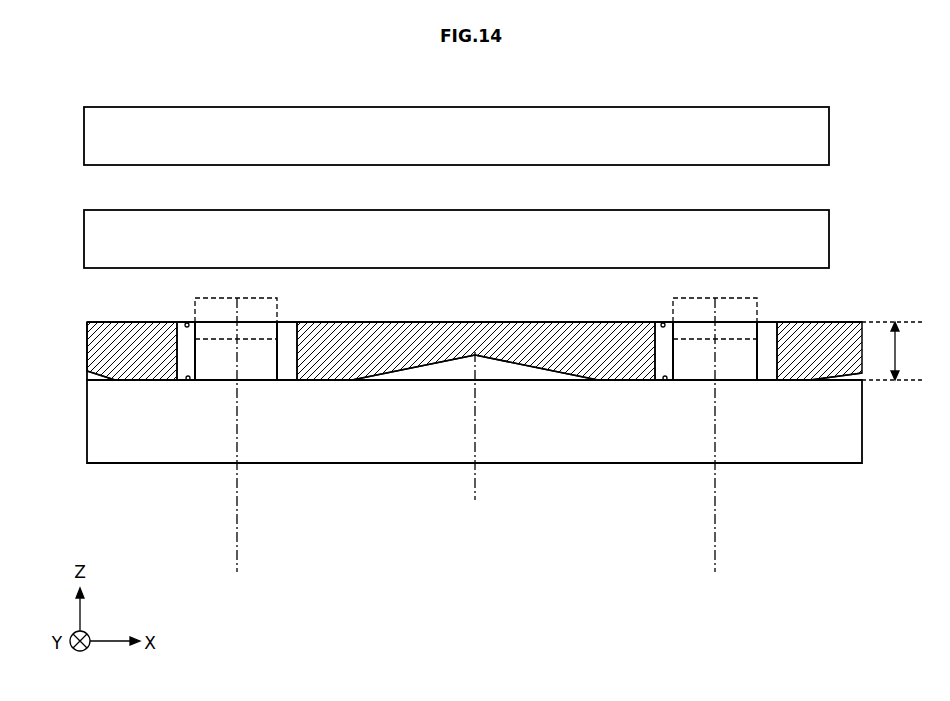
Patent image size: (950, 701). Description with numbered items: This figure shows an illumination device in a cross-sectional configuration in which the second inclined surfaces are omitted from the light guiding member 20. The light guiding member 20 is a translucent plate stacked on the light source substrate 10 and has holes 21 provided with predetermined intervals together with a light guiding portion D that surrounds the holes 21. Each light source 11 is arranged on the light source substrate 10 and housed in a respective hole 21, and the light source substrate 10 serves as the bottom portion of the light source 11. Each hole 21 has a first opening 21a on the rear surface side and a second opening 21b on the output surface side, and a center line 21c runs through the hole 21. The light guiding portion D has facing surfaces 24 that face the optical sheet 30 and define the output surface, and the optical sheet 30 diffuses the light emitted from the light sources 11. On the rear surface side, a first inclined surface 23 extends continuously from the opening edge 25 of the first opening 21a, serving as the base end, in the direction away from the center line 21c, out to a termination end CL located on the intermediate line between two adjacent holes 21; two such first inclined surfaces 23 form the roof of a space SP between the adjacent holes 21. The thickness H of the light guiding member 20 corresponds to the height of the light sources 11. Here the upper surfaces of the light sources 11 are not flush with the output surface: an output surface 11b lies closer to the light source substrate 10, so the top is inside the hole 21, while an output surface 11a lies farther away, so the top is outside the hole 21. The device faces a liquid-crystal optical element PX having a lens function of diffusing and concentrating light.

The light source substrate 10 is at (844, 446).
The light source 11 is at (252, 332).
The output surface 11a is at (259, 300).
The output surface 11b is at (259, 338).
The light guiding member 20 is at (71, 333).
The hole 21 is at (282, 380).
The first opening 21a is at (188, 380).
The second opening 21b is at (187, 323).
The center line 21c is at (476, 446).
The first inclined surface 23 is at (105, 380).
The facing surface 24 is at (500, 322).
The opening edge 25 is at (177, 380).
The optical sheet 30 is at (521, 210).
The liquid-crystal optical element PX is at (759, 107).
The termination end CL is at (477, 437).
The light guiding portion D is at (386, 358).
The space SP is at (458, 370).
The thickness H is at (893, 351).